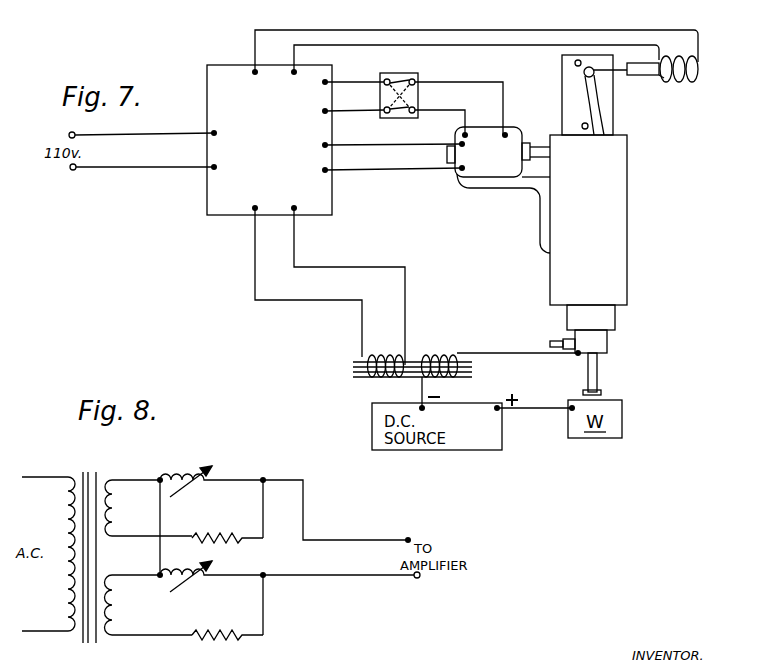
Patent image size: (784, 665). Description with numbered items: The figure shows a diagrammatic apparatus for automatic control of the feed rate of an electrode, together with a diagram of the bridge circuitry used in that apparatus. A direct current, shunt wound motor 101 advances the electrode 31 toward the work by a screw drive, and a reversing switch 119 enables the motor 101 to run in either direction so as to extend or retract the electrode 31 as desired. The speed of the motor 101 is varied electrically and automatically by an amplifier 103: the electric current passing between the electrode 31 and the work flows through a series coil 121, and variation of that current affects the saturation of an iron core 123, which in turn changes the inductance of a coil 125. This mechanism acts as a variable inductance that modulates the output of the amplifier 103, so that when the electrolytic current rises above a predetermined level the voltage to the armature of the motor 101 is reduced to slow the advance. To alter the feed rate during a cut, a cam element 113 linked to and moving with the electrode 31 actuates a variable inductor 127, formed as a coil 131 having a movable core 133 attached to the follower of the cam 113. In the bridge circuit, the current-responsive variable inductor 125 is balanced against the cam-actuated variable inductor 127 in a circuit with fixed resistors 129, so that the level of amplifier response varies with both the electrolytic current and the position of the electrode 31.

In FIG. 7, the amplifier 103 is at (290, 183).
In FIG. 7, the reversing switch 119 is at (411, 74).
In FIG. 7, the motor 101 is at (492, 162).
In FIG. 7, the cam element 113 is at (583, 94).
In FIG. 7, the movable core 133 is at (645, 76).
In FIG. 7, the variable inductor 127 is at (702, 62).
In FIG. 8, the variable inductor 127 is at (217, 563).
In FIG. 7, the coil 131 is at (676, 84).
In FIG. 8, the coil 131 is at (235, 454).
In FIG. 7, the coil 125 is at (385, 356).
In FIG. 8, the coil 125 is at (176, 476).
In FIG. 7, the iron core 123 is at (412, 378).
In FIG. 7, the series coil 121 is at (438, 357).
In FIG. 7, the electrode 31 is at (598, 367).
In FIG. 8, the fixed resistors 129 is at (225, 517).